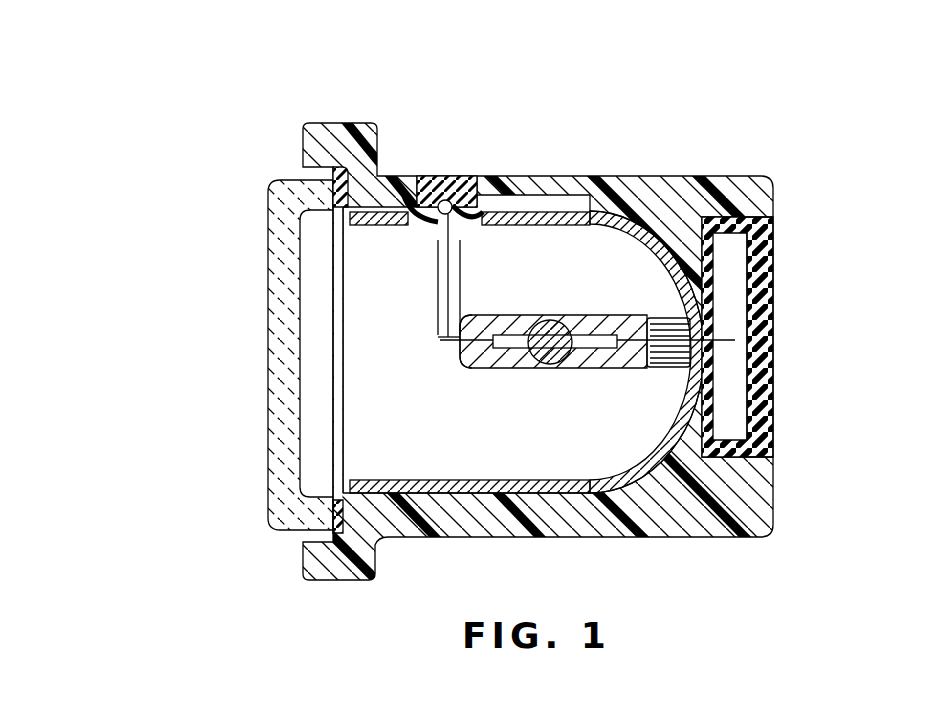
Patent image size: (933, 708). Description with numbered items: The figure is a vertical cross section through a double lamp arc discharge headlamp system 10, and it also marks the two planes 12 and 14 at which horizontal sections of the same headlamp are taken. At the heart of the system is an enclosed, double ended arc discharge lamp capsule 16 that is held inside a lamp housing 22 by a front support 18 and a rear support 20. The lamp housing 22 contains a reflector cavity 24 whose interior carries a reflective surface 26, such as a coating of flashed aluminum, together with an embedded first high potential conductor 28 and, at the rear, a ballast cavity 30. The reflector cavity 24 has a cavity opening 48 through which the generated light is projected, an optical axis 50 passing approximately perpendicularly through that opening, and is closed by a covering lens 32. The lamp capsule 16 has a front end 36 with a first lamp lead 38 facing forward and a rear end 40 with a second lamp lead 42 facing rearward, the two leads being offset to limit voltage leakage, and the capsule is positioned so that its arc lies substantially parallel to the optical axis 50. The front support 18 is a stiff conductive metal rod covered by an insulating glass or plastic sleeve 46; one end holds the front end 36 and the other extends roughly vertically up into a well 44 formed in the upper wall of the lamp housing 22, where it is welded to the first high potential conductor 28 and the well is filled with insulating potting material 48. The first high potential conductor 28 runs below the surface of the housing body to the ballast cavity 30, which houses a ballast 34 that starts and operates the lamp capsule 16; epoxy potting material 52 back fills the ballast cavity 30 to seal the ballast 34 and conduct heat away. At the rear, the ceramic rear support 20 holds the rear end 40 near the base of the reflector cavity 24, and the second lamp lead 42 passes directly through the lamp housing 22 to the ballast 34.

The arc discharge headlamp system 10 is at (386, 72).
The horizontal section plane 12 is at (254, 192).
The horizontal section plane 14 is at (152, 342).
The arc discharge lamp capsule 16 is at (546, 375).
The front support 18 is at (440, 305).
The rear support 20 is at (672, 366).
The lamp housing 22 is at (598, 515).
The reflector cavity 24 is at (384, 444).
The reflective surface 26 is at (613, 227).
The first high potential conductor 28 is at (592, 176).
The ballast cavity 30 is at (738, 176).
The covering lens 32 is at (268, 390).
The ballast 34 is at (765, 250).
The front end 36 is at (445, 340).
The first lamp lead 38 is at (458, 366).
The rear end 40 is at (630, 368).
The second lamp lead 42 is at (620, 352).
The well 44 is at (432, 165).
The sleeve 46 is at (438, 262).
The cavity opening 48 is at (457, 176).
The optical axis 50 is at (253, 342).
The potting material 52 is at (732, 462).